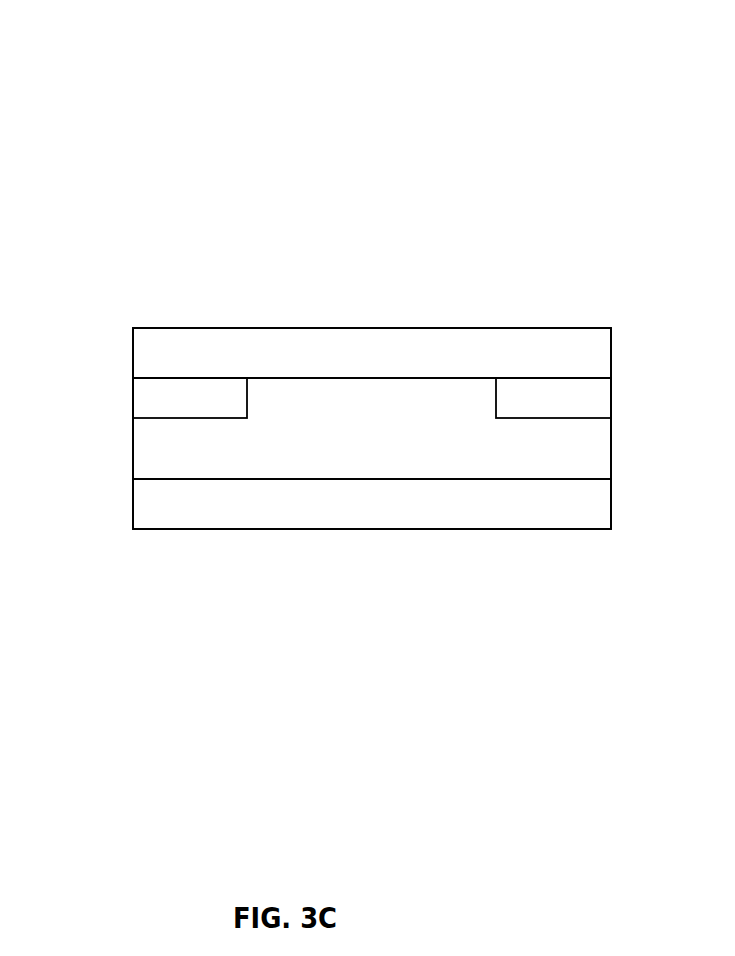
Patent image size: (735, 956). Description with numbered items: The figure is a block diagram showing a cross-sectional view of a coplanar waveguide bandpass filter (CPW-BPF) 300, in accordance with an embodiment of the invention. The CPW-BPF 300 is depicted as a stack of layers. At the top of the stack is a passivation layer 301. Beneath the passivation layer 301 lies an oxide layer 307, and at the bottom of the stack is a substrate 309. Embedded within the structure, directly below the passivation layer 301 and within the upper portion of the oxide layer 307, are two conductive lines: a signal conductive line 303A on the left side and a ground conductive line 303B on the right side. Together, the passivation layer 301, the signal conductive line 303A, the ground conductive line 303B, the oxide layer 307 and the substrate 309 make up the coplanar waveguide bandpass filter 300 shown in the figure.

The coplanar waveguide bandpass filter 300 is at (115, 123).
The passivation layer 301 is at (372, 353).
The signal conductive line 303A is at (133, 405).
The ground conductive line 303B is at (611, 397).
The oxide layer 307 is at (429, 444).
The substrate 309 is at (447, 516).